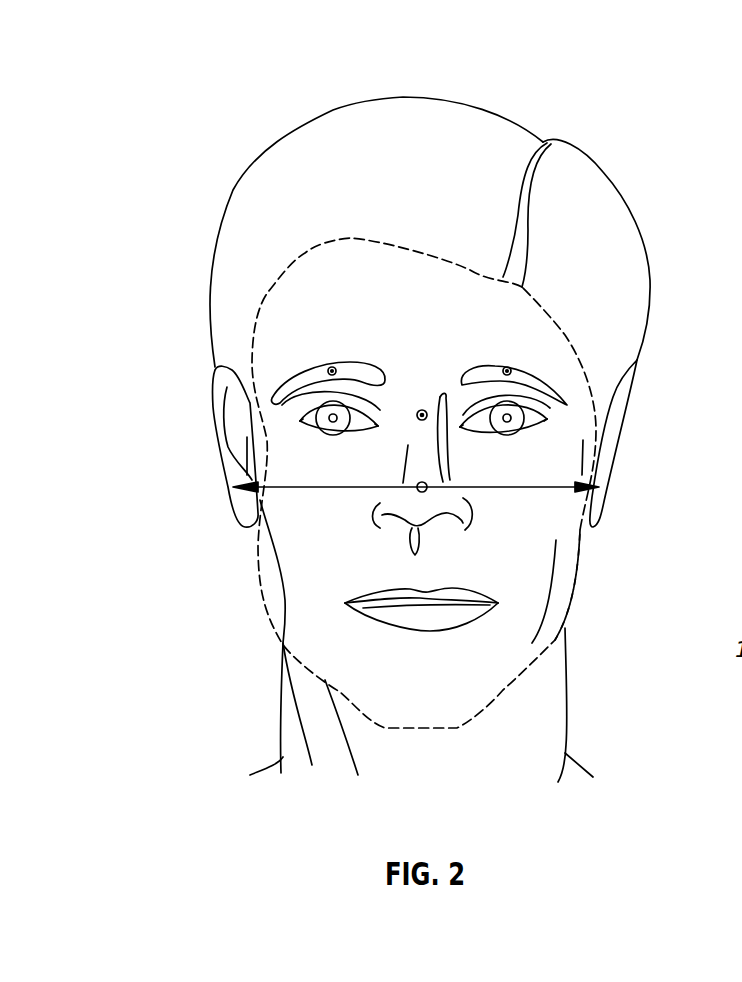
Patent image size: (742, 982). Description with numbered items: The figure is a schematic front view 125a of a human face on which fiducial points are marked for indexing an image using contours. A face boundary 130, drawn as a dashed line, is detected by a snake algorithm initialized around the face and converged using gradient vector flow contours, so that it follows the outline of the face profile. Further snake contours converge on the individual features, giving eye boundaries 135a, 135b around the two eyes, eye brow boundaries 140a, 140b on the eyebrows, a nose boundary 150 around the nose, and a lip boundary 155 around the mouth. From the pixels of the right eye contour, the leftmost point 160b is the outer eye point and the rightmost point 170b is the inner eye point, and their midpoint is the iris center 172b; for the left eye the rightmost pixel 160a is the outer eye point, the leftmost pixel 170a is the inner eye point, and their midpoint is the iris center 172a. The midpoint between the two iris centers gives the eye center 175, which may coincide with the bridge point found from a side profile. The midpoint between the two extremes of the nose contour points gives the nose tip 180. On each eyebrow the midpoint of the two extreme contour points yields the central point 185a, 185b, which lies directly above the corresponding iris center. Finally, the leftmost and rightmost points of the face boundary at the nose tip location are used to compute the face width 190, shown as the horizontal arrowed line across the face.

The front view 125a is at (256, 131).
The face boundary 130 is at (582, 583).
The eye boundary 135a is at (545, 416).
The eye boundary 135b is at (300, 421).
The eye brow boundary 140a is at (540, 378).
The eye brow boundary 140b is at (298, 386).
The nose boundary 150 is at (385, 516).
The lip boundary 155 is at (470, 617).
The outer eye point 160a is at (547, 420).
The outer eye point 160b is at (298, 423).
The inner eye point 170a is at (460, 427).
The inner eye point 170b is at (378, 427).
The iris center 172a is at (508, 419).
The iris center 172b is at (333, 421).
The eye center 175 is at (419, 420).
The nose tip 180 is at (426, 490).
The central point 185a is at (507, 371).
The central point 185b is at (332, 371).
The face width 190 is at (326, 487).